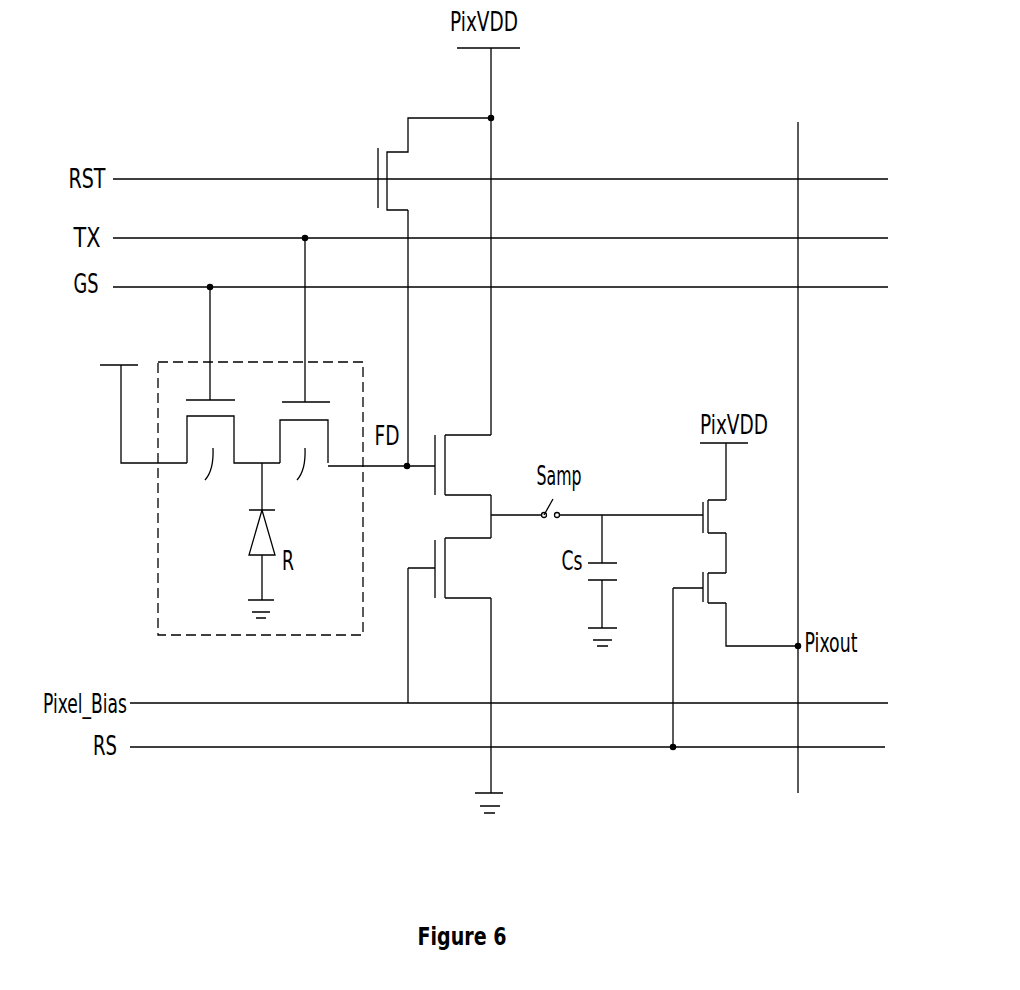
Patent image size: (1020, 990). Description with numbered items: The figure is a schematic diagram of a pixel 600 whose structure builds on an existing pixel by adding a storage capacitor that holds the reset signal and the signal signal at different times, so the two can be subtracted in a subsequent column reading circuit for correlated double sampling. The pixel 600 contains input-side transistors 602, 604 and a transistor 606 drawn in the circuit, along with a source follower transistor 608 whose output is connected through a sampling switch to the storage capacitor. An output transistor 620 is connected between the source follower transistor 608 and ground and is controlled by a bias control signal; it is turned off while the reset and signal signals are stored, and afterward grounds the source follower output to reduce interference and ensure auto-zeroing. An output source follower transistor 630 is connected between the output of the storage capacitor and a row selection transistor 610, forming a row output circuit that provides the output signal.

The pixel 600 is at (699, 70).
The global shutter transistor 602 is at (229, 404).
The transfer transistor 604 is at (305, 379).
The reset transistor 606 is at (420, 164).
The source follower transistor 608 is at (461, 464).
The row selection transistor 610 is at (721, 588).
The output transistor 620 is at (449, 598).
The output source follower transistor 630 is at (736, 535).